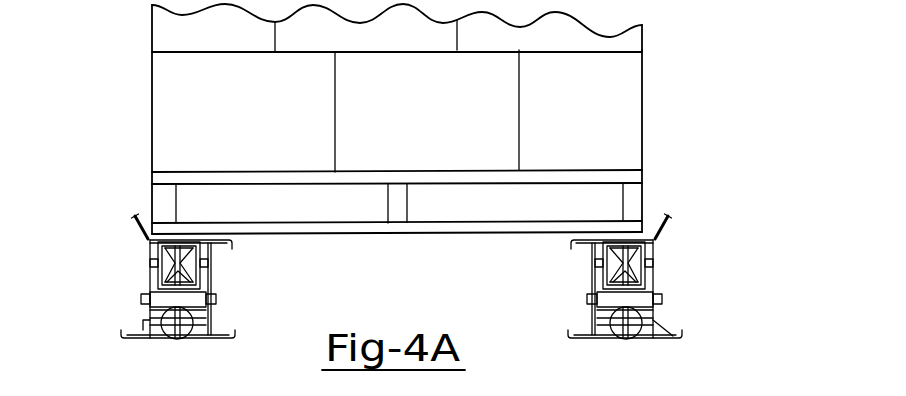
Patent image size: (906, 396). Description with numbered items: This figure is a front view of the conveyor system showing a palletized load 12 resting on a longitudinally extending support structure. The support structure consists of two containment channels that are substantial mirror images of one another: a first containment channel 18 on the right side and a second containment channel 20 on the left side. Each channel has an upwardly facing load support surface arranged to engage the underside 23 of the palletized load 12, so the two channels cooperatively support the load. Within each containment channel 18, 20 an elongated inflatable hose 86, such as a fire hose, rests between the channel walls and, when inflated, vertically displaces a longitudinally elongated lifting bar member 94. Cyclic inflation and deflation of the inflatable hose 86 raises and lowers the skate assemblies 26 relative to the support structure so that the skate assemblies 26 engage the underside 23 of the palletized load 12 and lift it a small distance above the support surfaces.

The palletized load 12 is at (650, 94).
The underside 23 is at (417, 235).
The skate assembly 26 is at (150, 246).
The second containment channel 20 is at (141, 297).
The lifting bar member 94 is at (190, 298).
The first containment channel 18 is at (653, 260).
The inflatable hose 86 is at (653, 300).